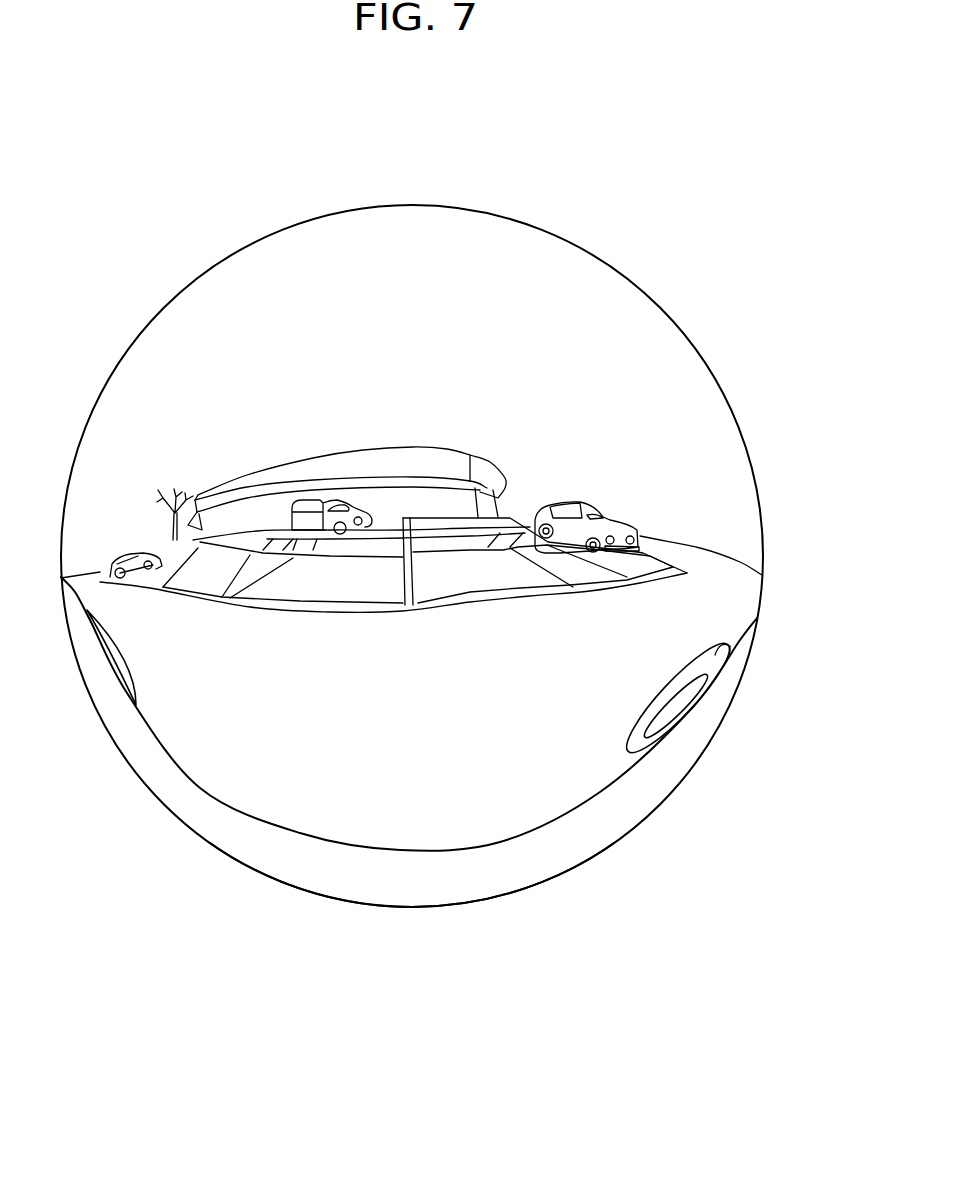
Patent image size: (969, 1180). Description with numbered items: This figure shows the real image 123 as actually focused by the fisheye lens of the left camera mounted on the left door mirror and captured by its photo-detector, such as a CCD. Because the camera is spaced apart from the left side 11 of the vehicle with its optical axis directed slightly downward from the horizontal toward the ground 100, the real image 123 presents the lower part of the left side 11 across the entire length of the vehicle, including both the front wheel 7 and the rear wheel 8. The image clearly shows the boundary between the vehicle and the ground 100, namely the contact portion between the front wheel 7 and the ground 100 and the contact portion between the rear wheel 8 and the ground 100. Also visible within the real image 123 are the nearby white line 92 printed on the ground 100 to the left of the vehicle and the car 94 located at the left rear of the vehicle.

The real image 123 is at (590, 233).
The ground 100 is at (472, 807).
The left side 11 is at (393, 878).
The rear wheel 8 is at (136, 705).
The front wheel 7 is at (677, 707).
The white line 92 is at (358, 606).
The car 94 is at (110, 556).